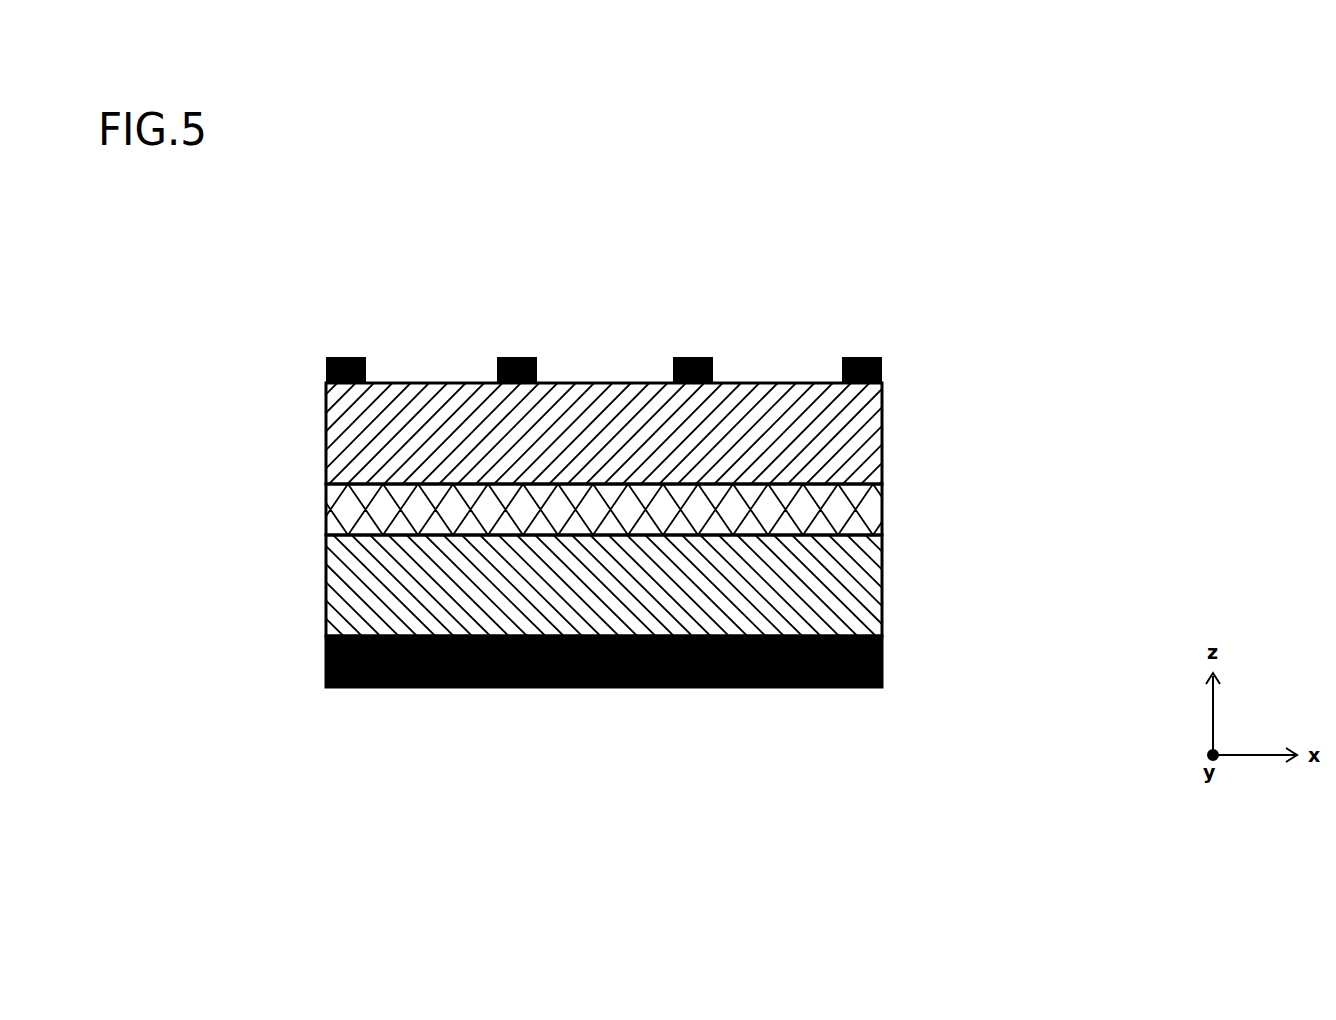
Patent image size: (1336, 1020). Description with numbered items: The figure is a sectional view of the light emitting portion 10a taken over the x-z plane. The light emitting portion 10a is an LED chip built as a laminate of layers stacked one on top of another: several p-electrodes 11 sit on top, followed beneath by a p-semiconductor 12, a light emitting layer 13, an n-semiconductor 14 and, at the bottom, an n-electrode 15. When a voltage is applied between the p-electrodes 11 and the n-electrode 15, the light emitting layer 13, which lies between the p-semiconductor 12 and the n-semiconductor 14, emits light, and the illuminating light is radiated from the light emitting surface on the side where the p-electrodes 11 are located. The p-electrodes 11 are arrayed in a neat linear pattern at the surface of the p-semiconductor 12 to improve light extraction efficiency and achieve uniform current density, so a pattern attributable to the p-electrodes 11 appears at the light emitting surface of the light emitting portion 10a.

The light emitting portion 10a is at (310, 380).
The p-electrodes 11 is at (872, 355).
The p-semiconductor 12 is at (882, 482).
The light emitting layer 13 is at (882, 541).
The n-semiconductor 14 is at (882, 631).
The n-electrode 15 is at (875, 694).